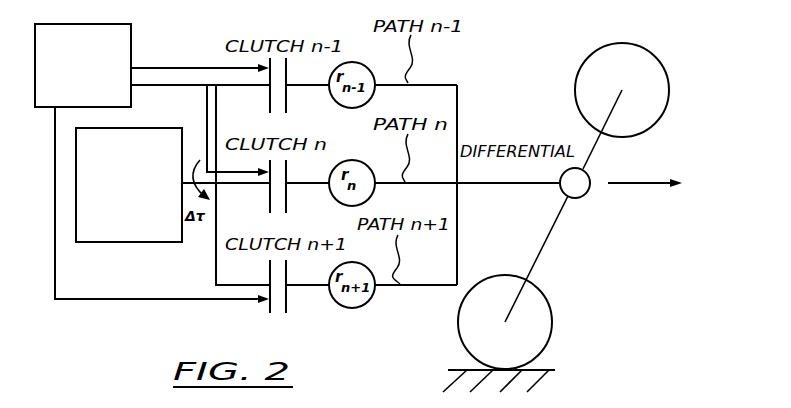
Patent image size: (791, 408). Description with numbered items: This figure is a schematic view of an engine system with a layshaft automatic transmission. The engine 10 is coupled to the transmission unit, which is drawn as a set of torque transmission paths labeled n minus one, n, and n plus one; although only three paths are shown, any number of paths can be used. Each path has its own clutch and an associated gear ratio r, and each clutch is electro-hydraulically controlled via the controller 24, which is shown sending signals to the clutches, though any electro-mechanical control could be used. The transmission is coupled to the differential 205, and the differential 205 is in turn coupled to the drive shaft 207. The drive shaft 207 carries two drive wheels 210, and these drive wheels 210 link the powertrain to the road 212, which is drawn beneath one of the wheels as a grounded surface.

The controller 24 is at (91, 77).
The engine 10 is at (139, 207).
The differential 205 is at (587, 191).
The drive shaft 207 is at (592, 147).
The drive wheels 210 is at (657, 50).
The road 212 is at (547, 370).